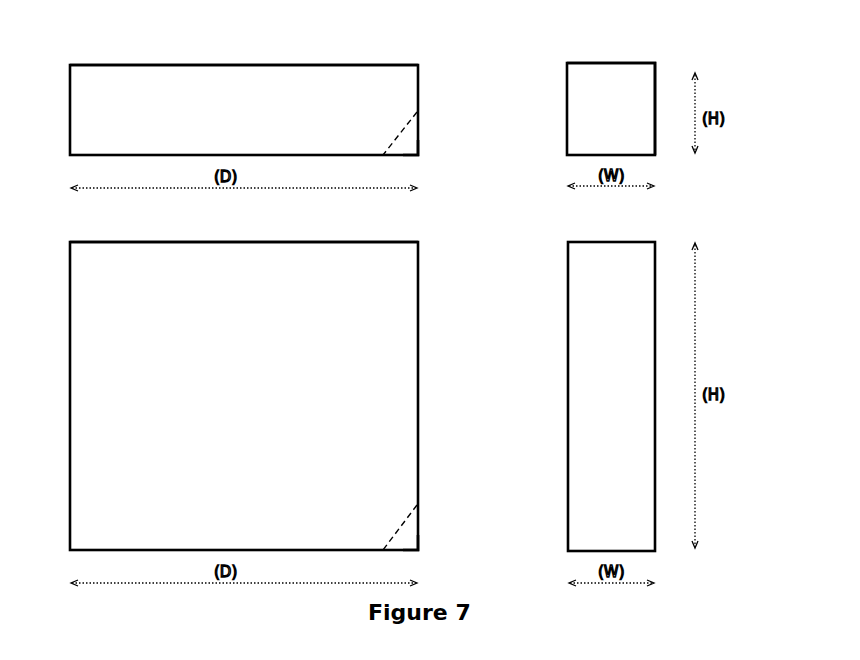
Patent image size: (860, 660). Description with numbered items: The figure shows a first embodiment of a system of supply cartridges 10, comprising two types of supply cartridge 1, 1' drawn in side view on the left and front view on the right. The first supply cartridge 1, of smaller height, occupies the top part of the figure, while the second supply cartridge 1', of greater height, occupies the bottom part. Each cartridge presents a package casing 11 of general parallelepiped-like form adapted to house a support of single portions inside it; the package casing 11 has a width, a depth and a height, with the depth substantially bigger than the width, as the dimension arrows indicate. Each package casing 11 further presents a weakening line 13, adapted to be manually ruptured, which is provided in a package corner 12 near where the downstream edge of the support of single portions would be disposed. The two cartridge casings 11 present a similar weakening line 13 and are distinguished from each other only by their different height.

The supply cartridge 1 is at (226, 96).
The second supply cartridge 1' is at (226, 383).
The system of supply cartridges 10 is at (675, 94).
The package casing 11 is at (363, 295).
The package corner 12 is at (422, 155).
The weakening line 13 is at (390, 145).